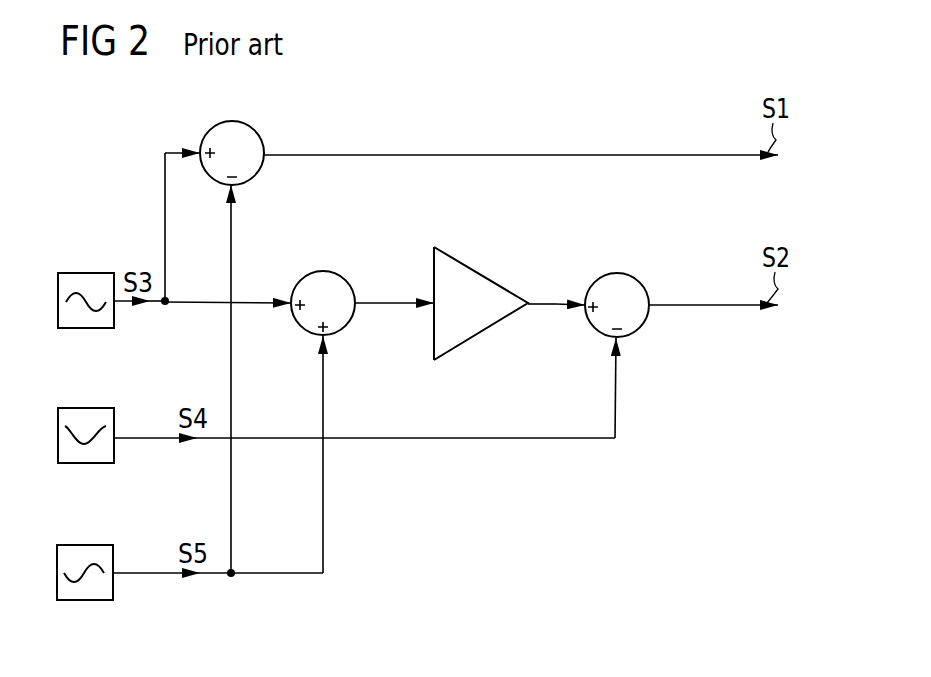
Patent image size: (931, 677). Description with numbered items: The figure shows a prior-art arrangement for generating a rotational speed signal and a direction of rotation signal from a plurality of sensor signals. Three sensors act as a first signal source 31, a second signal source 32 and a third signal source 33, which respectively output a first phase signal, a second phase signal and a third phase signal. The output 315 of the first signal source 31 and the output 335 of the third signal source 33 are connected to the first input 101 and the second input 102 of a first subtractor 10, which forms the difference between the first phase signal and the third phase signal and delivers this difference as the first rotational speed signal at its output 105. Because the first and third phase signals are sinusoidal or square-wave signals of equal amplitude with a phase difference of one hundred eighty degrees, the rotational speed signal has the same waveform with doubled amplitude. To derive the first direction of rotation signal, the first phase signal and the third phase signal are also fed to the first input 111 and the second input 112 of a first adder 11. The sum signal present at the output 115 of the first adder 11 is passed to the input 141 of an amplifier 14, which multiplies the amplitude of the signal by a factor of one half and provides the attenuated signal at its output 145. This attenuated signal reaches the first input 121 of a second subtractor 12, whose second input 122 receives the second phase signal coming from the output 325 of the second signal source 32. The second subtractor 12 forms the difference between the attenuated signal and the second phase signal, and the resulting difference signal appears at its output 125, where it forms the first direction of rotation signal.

The first subtractor 10 is at (222, 186).
The first input of the first subtractor 101 is at (202, 148).
The second input of the first subtractor 102 is at (238, 187).
The output of the first subtractor 105 is at (264, 150).
The first adder 11 is at (322, 271).
The first input of the first adder 111 is at (288, 307).
The second input of the first adder 112 is at (328, 338).
The output of the first adder 115 is at (356, 298).
The second subtractor 12 is at (617, 272).
The first input of the second subtractor 121 is at (584, 312).
The second input of the second subtractor 122 is at (621, 340).
The output of the second subtractor 125 is at (651, 300).
The amplifier 14 is at (468, 264).
The input of the amplifier 141 is at (433, 312).
The output of the amplifier 145 is at (526, 310).
The first signal source 31 is at (87, 272).
The output of the first signal source 315 is at (115, 305).
The second signal source 32 is at (84, 408).
The output of the second signal source 325 is at (115, 441).
The third signal source 33 is at (84, 545).
The output of the third signal source 335 is at (114, 568).